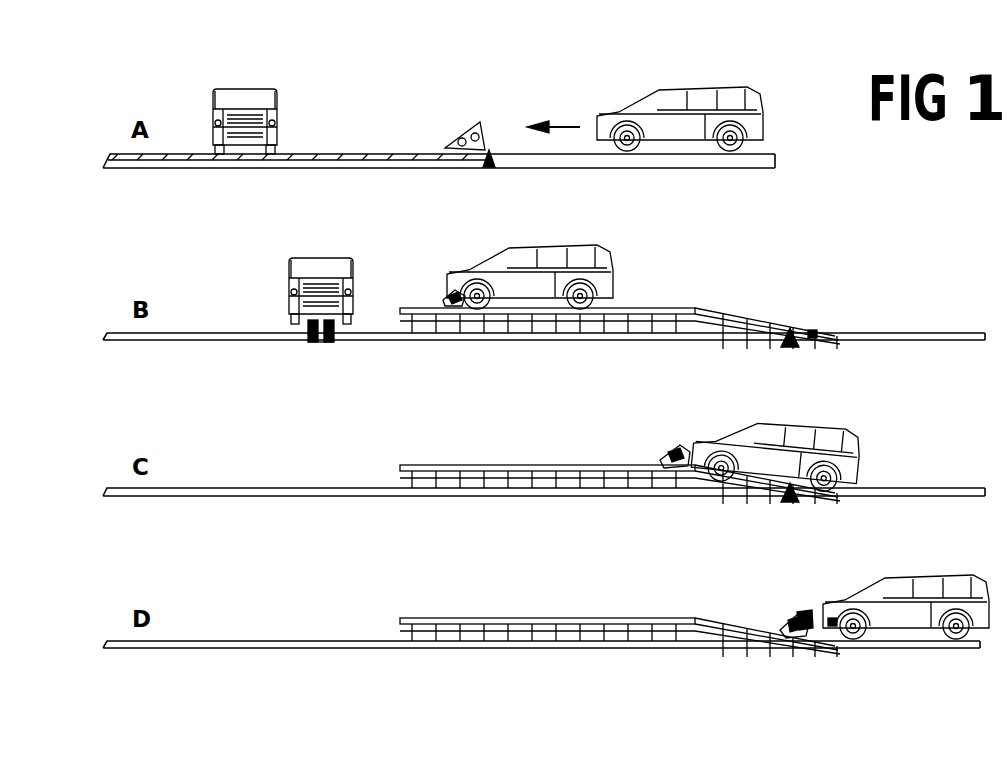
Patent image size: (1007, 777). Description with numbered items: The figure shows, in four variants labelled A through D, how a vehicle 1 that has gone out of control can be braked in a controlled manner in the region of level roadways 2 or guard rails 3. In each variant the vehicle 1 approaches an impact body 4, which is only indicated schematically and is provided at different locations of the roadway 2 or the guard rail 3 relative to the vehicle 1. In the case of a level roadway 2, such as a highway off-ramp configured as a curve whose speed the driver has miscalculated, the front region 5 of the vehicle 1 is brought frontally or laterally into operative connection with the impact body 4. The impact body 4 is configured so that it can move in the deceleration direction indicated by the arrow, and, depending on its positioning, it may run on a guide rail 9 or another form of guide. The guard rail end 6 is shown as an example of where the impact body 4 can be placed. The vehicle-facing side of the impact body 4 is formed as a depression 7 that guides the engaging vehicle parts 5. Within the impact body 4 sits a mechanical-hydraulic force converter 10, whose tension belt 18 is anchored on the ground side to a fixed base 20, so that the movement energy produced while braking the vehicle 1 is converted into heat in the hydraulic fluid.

The vehicle 1 is at (660, 122).
The level roadway 2 is at (357, 152).
The guard rail 3 is at (410, 305).
The impact body 4 is at (448, 140).
The front region of the vehicle 5 is at (228, 117).
The guard rail end 6 is at (813, 333).
The depression 7 is at (807, 613).
The guide rail 9 is at (400, 154).
The mechanical-hydraulic force converter 10 is at (437, 303).
The tension belt 18 is at (480, 145).
The fixed base 20 is at (492, 148).